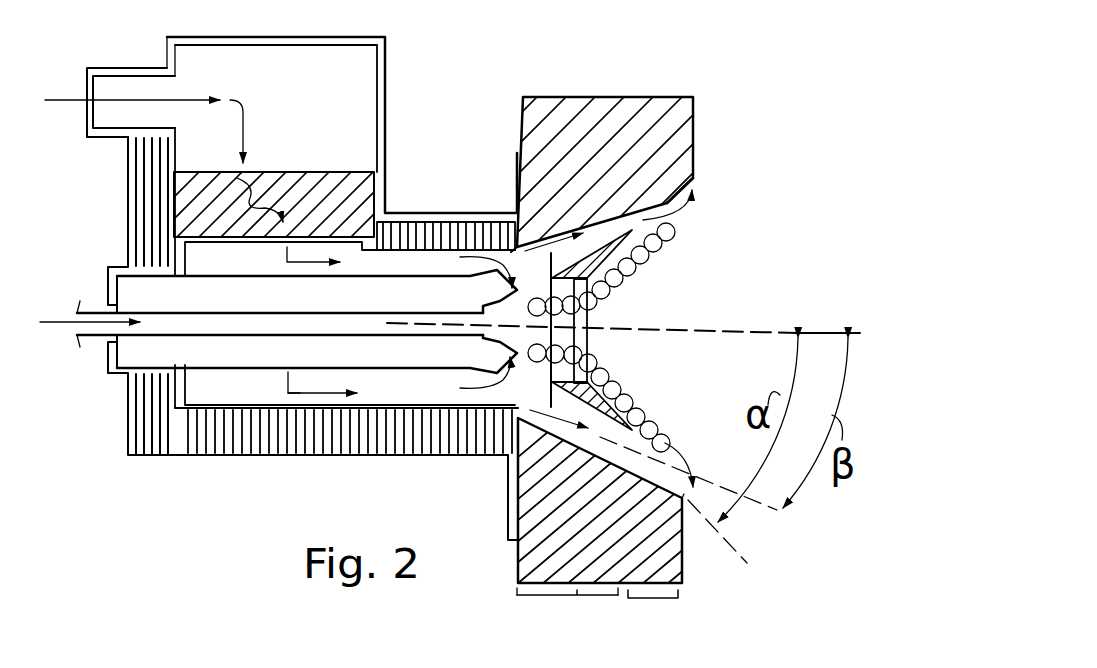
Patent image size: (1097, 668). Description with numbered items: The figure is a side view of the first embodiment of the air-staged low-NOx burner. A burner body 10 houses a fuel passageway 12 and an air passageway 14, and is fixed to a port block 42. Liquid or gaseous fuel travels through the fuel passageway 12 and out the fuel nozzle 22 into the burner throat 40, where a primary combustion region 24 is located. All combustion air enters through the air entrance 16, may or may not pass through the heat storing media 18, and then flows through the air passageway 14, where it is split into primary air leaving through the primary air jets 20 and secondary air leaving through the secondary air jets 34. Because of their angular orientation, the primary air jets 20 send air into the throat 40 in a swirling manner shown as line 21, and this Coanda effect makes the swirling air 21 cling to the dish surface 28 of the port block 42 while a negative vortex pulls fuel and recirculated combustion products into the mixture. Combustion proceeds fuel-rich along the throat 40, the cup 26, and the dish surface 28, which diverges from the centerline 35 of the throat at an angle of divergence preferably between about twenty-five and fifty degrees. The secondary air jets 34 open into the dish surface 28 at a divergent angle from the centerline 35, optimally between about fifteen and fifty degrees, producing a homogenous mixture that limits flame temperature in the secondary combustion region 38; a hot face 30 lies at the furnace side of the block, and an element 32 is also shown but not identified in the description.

The burner body 10 is at (220, 465).
The fuel passageway 12 is at (192, 322).
The air passageway 14 is at (324, 64).
The air entrance 16 is at (86, 118).
The heat storing media 18 is at (353, 200).
The primary air jets 20 is at (520, 205).
The swirling air 21 is at (668, 252).
The fuel nozzle 22 is at (475, 318).
The primary combustion region 24 is at (567, 615).
The cup 26 is at (605, 315).
The dish surface 28 is at (653, 265).
The hot face 30 is at (740, 137).
The plate 32 is at (517, 208).
The secondary air jets 34 is at (673, 220).
The centerline 35 is at (770, 325).
The secondary combustion region 38 is at (653, 616).
The burner throat 40 is at (462, 375).
The port block 42 is at (612, 150).